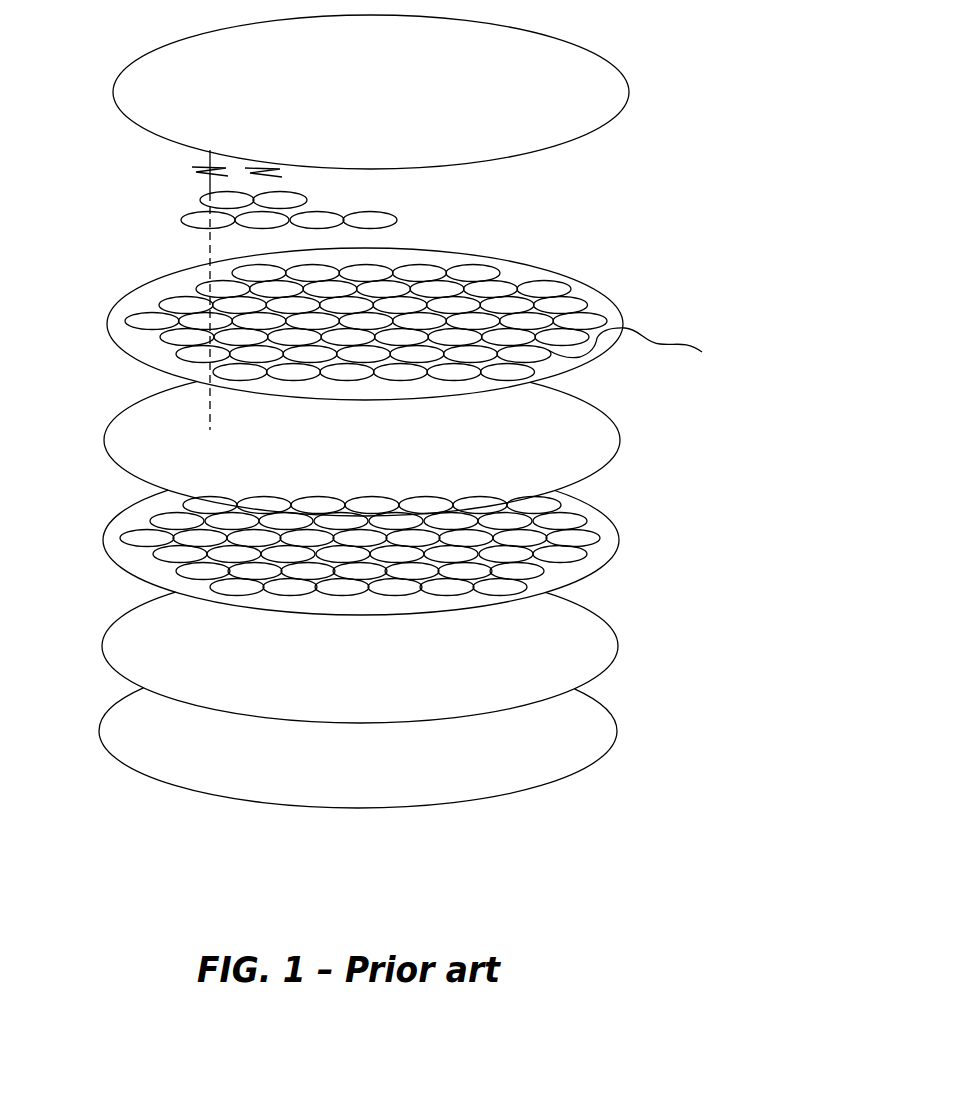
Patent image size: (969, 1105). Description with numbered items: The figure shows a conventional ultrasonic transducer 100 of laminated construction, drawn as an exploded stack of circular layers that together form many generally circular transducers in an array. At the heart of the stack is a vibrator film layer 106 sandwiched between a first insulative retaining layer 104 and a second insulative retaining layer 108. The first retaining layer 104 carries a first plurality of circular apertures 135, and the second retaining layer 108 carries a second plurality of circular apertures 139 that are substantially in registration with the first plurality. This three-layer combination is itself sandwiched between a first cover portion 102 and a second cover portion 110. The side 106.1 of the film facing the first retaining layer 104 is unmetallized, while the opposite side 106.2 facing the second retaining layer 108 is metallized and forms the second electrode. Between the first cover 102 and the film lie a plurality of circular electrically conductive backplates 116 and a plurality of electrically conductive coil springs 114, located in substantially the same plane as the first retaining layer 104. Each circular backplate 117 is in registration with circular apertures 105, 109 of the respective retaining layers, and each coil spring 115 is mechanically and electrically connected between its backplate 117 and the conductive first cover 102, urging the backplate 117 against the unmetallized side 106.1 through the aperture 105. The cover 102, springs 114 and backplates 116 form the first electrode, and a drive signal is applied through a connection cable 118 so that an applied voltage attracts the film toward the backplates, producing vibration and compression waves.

The ultrasonic transducer 100 is at (708, 124).
The first cover portion 102 is at (168, 60).
The first insulative retaining layer 104 is at (108, 322).
The circular aperture 105 is at (200, 323).
The vibrator film layer 106 is at (128, 412).
The unmetallized side of the vibrator film layer 106.1 is at (573, 427).
The metallized side of the vibrator film layer 106.2 is at (621, 486).
The second insulative retaining layer 108 is at (104, 546).
The circular aperture 109 is at (195, 502).
The second cover portion 110 is at (626, 692).
The plurality of electrically conductive coil springs 114 is at (304, 178).
The coil spring 115 is at (210, 172).
The plurality of circular electrically conductive backplates 116 is at (418, 227).
The circular backplate 117 is at (190, 212).
The connection cable 118 is at (677, 347).
The first plurality of circular apertures 135 is at (590, 268).
The second plurality of circular apertures 139 is at (616, 585).